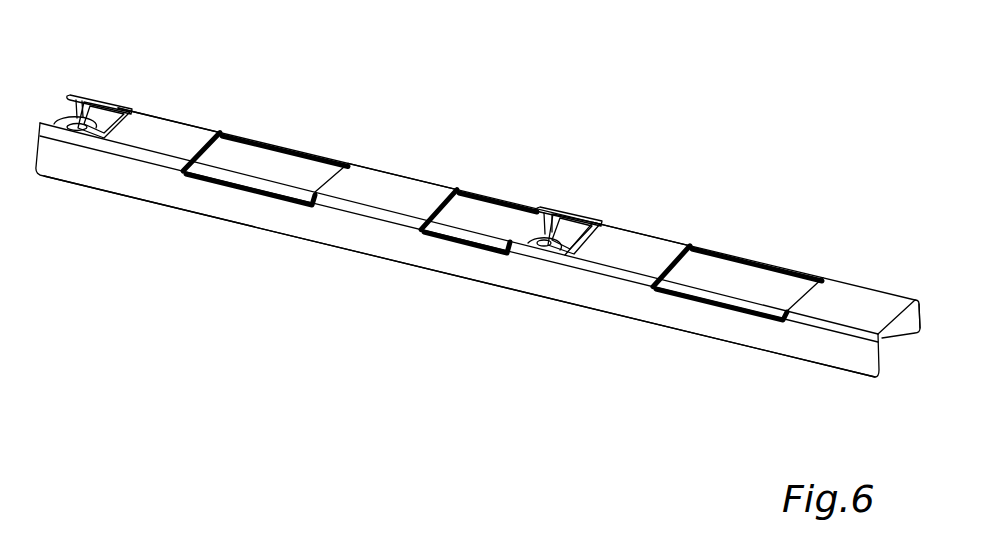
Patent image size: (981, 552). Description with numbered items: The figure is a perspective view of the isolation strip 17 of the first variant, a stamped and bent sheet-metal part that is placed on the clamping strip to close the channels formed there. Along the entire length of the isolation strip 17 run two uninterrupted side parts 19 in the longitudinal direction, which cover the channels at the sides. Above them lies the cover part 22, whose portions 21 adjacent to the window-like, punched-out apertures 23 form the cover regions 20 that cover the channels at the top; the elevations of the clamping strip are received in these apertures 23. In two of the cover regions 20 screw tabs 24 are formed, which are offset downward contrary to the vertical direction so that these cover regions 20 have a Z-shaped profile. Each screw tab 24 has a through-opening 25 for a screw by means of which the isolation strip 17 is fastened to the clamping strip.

The isolation strip 17 is at (756, 197).
The side parts 19 is at (476, 195).
The cover regions 20 is at (152, 132).
The portions 21 is at (177, 133).
The cover part 22 is at (858, 283).
The window-like apertures 23 is at (257, 188).
The screw tabs 24 is at (110, 115).
The through-opening 25 is at (91, 96).